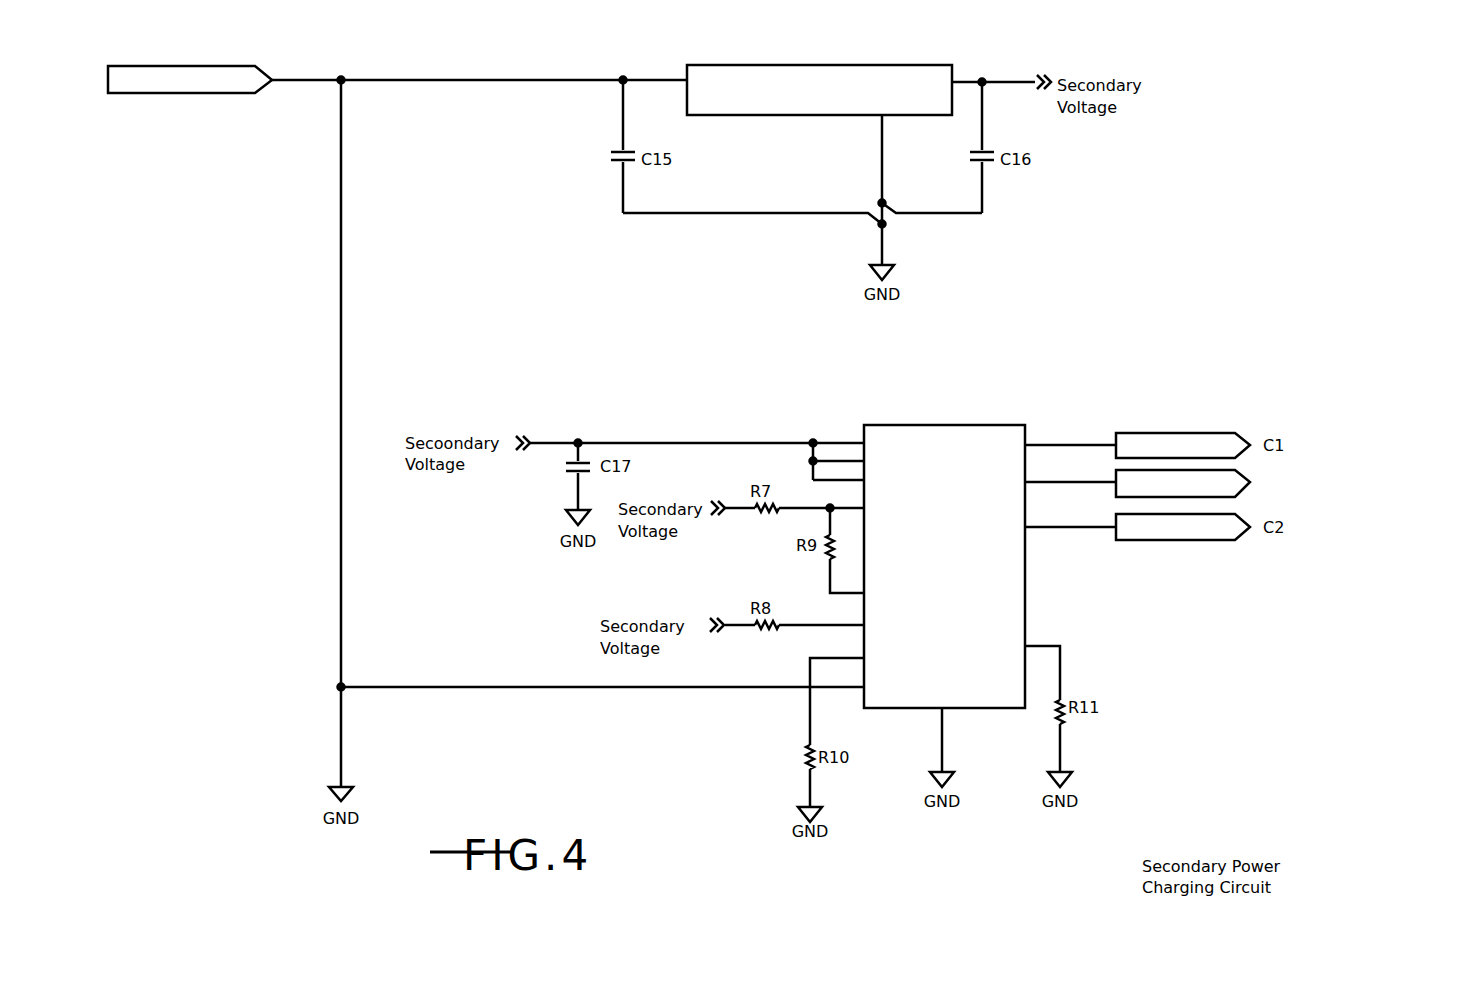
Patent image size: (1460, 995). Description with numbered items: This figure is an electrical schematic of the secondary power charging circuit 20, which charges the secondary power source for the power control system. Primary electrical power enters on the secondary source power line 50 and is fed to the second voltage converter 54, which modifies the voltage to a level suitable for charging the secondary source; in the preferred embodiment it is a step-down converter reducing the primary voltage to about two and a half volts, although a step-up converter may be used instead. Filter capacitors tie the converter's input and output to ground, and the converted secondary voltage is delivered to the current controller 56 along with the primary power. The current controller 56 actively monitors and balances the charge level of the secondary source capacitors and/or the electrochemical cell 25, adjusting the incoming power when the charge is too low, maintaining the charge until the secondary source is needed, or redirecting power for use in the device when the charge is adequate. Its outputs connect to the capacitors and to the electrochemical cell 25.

The secondary power charging circuit 20 is at (1200, 192).
The secondary source power line 50 is at (285, 79).
The second voltage converter 54 is at (687, 72).
The current controller 56 is at (1020, 619).
The electrochemical cell 25 is at (1239, 483).